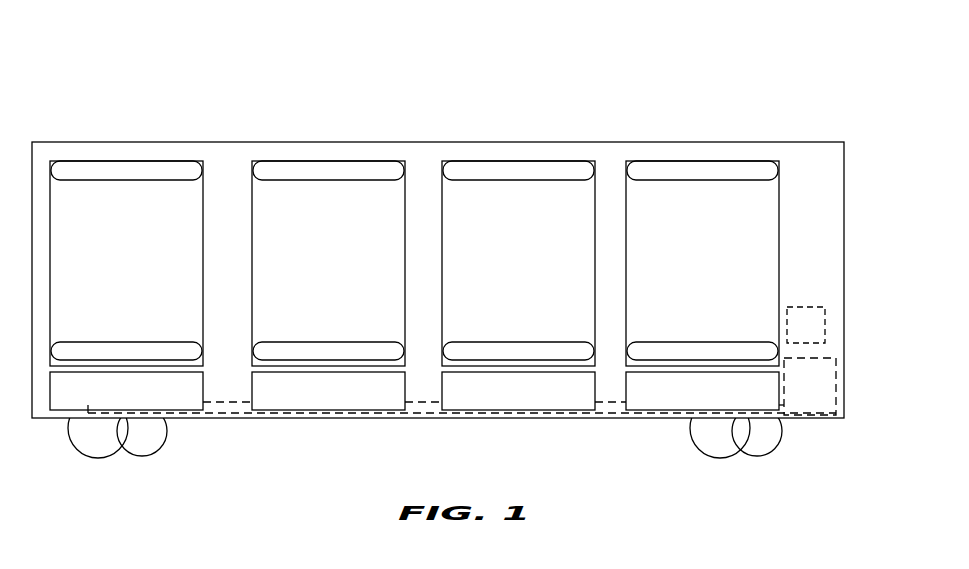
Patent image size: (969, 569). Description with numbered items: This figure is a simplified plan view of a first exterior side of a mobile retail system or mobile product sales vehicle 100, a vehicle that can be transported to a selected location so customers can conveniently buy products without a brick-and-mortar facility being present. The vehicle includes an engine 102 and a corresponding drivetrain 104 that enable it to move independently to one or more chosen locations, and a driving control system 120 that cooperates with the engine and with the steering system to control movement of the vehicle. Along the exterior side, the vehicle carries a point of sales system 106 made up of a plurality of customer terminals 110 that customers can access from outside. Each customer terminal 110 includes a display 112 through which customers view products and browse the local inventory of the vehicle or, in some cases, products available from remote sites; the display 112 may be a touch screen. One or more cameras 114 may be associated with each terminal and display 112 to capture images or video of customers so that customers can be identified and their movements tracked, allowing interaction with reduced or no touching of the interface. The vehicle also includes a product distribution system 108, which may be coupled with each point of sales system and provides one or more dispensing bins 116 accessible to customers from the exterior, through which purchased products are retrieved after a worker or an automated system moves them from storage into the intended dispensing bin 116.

The mobile product sales vehicle 100 is at (760, 82).
The engine 102 is at (822, 415).
The drivetrain 104 is at (227, 415).
The point of sales system 106 is at (442, 119).
The product distribution system 108 is at (585, 437).
The customer terminal 110 is at (208, 189).
The display 112 is at (107, 212).
The camera 114 is at (96, 166).
The dispensing bin 116 is at (177, 400).
The driving control system 120 is at (804, 307).